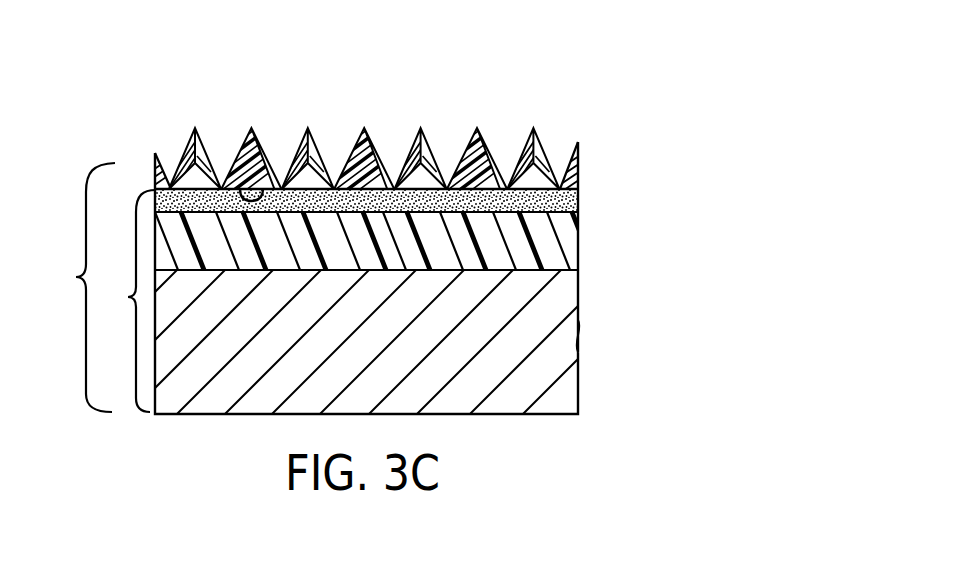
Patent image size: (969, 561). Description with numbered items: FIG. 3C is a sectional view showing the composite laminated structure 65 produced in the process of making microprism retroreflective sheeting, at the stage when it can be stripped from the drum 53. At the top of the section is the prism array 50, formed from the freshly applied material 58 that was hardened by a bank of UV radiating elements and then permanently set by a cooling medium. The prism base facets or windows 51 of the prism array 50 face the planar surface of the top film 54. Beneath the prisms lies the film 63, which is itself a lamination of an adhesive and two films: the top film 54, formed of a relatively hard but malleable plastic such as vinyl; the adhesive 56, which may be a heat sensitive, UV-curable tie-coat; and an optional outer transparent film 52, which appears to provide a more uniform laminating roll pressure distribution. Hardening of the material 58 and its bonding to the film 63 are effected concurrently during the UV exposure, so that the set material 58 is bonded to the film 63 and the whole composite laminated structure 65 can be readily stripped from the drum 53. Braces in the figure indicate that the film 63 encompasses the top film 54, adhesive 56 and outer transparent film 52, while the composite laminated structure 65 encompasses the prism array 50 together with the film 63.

The prism array 50 is at (406, 88).
The prism base facets or windows 51 is at (231, 178).
The material 58 is at (233, 168).
The drum 53 is at (522, 158).
The adhesive 56 is at (578, 201).
The top film 54 is at (578, 250).
The outer transparent film 52 is at (578, 338).
The composite laminated structure 65 is at (76, 287).
The film 63 is at (124, 301).